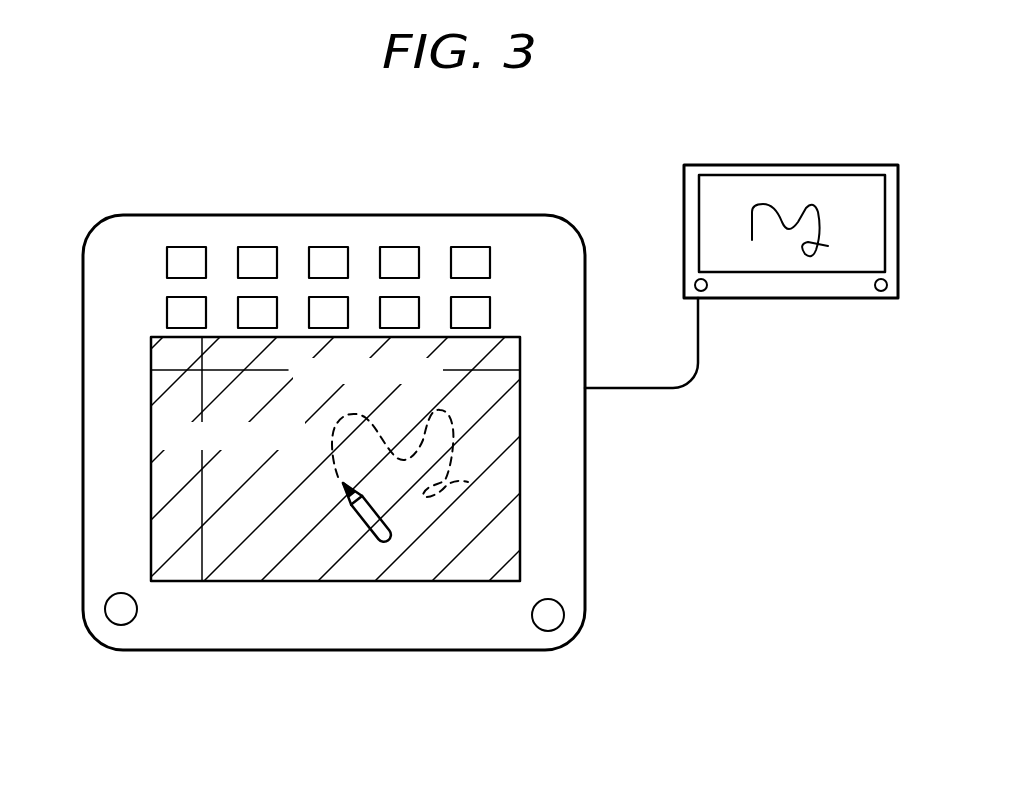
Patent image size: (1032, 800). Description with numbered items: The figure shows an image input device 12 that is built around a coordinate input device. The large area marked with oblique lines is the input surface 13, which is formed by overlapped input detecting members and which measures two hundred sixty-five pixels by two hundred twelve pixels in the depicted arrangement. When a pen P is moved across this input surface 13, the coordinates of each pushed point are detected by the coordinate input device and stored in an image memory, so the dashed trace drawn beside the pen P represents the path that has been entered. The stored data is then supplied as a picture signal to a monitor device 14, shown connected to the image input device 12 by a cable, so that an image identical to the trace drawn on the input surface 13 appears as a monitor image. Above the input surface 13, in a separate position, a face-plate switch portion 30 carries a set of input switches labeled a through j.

The image input device 12 is at (585, 565).
The input surface 13 is at (507, 470).
The monitor device 14 is at (790, 245).
The face-plate switch portion 30 is at (510, 330).
The pen P is at (375, 536).